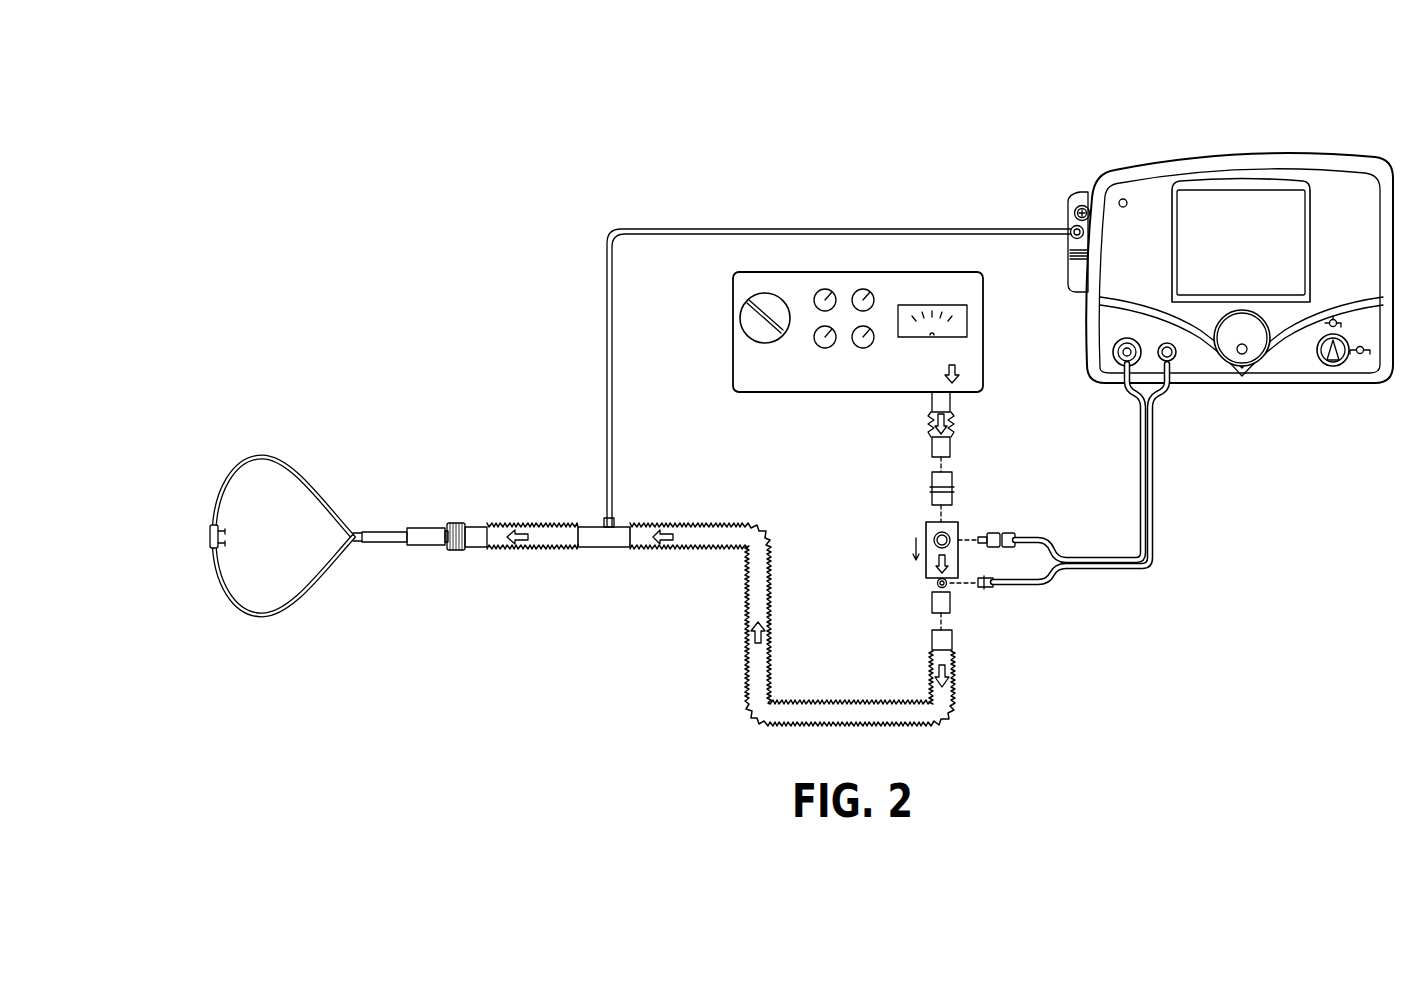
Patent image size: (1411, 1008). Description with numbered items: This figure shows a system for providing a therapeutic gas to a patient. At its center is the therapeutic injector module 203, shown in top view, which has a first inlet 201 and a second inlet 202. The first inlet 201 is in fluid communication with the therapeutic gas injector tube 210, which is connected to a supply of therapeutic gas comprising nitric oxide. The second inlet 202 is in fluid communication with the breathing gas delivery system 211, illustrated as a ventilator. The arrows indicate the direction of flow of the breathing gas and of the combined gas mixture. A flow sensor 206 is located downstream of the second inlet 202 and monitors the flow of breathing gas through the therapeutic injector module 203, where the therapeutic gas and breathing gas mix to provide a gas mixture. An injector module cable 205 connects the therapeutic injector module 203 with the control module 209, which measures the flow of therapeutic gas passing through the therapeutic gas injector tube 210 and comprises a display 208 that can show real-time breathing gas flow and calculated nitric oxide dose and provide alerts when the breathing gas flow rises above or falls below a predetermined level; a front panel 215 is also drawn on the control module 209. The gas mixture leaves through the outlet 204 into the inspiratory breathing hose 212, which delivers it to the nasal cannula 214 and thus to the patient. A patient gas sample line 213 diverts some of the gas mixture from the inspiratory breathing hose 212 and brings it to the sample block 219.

The first inlet 201 is at (948, 586).
The second inlet 202 is at (930, 528).
The therapeutic injector module 203 is at (948, 535).
The outlet 204 is at (931, 600).
The injector module cable 205 is at (1139, 452).
The flow sensor 206 is at (926, 565).
The display 208 is at (1240, 185).
The control module 209 is at (1142, 172).
The therapeutic gas injector tube 210 is at (1154, 505).
The breathing gas delivery system 211 is at (745, 352).
The inspiratory breathing hose 212 is at (757, 676).
The patient gas sample line 213 is at (606, 358).
The nasal cannula 214 is at (210, 537).
The monitor front panel 215 is at (1135, 325).
The sample block 219 is at (1075, 200).